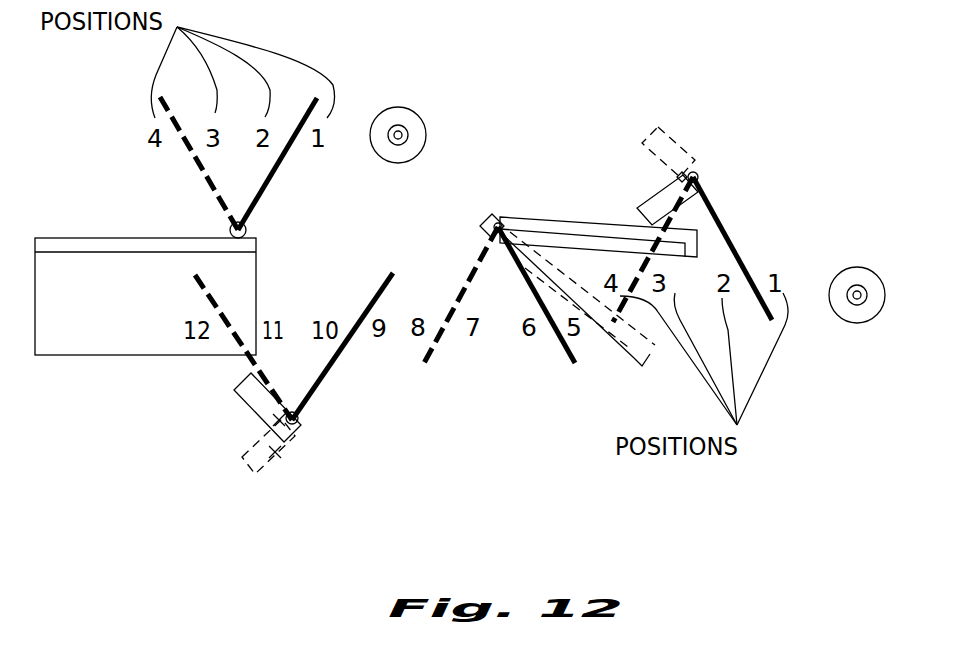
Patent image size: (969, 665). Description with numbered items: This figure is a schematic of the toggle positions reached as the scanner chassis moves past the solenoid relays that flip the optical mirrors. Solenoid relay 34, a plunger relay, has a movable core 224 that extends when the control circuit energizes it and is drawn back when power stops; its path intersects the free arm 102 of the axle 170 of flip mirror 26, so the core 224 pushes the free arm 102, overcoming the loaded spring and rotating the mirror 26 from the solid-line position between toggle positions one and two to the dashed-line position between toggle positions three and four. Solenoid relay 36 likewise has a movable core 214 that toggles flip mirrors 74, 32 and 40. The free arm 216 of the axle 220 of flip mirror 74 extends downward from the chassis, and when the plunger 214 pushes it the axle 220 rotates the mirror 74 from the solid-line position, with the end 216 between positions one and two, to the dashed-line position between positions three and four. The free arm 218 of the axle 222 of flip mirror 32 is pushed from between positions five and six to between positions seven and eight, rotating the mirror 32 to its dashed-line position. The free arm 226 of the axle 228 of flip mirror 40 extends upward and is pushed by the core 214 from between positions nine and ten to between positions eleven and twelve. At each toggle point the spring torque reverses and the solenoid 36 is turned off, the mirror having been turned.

The free arm of the axle of flip mirror 26 102 is at (277, 175).
The axle of flip mirror 26 170 is at (246, 230).
The flip mirror 26 is at (75, 343).
The free arm of the axle of flip mirror 40 226 is at (323, 382).
The axle of flip mirror 40 228 is at (298, 421).
The flip mirror 40 is at (310, 442).
The solenoid relay 34 is at (496, 104).
The movable core 224 is at (402, 133).
The axle of flip mirror 32 222 is at (497, 221).
The flip mirror 32 is at (553, 217).
The free arm of the axle of flip mirror 32 218 is at (567, 362).
The flip mirror 74 is at (674, 151).
The axle of flip mirror 74 220 is at (699, 176).
The free arm of the axle of flip mirror 74 216 is at (722, 223).
The movable core 214 is at (857, 291).
The solenoid relay 36 is at (848, 331).